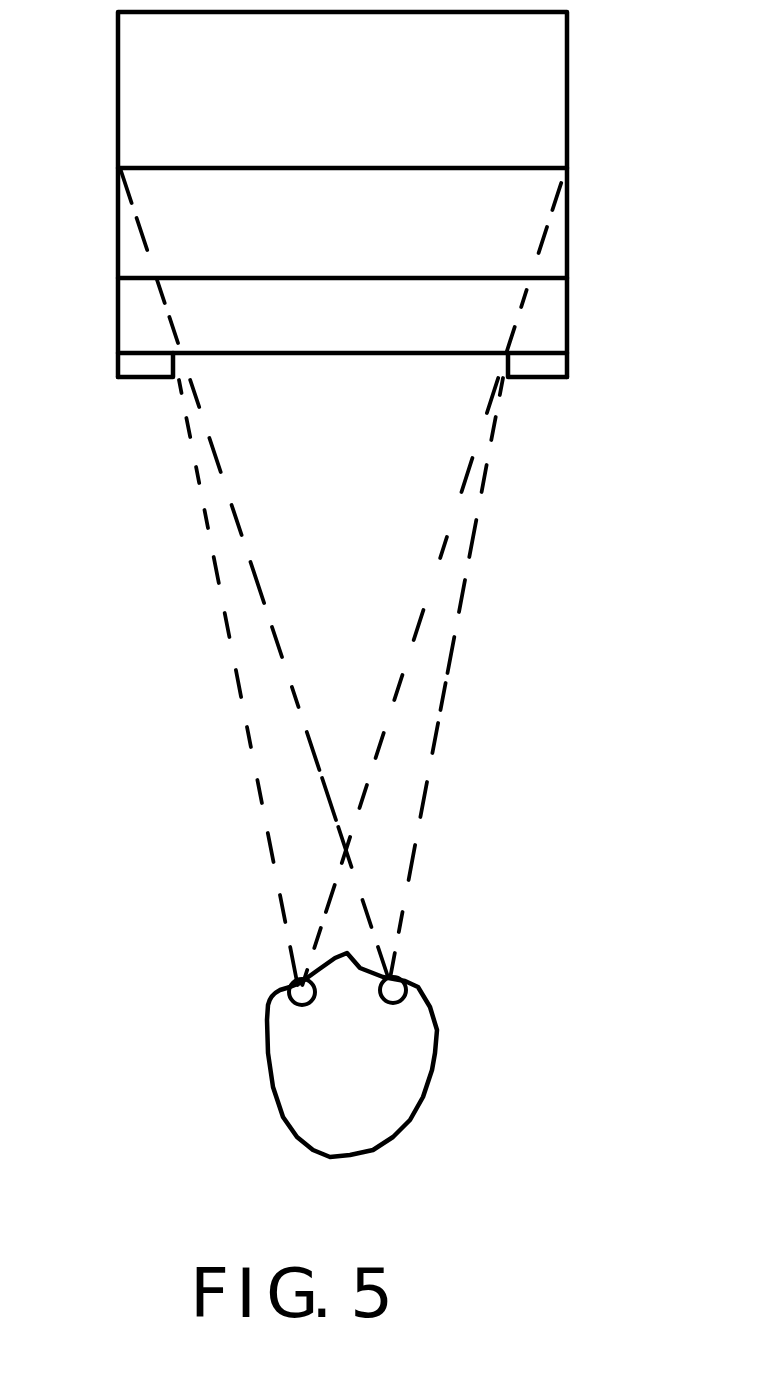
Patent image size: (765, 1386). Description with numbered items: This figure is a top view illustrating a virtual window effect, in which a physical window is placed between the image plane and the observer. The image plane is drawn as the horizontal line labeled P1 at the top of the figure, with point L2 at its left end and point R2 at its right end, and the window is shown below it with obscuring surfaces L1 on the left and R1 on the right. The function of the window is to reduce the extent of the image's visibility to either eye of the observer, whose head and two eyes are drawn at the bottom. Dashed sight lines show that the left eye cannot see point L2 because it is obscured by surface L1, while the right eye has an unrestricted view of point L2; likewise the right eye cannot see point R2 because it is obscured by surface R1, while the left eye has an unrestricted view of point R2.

The display panel / image plane P1 is at (268, 165).
The point L2 is at (124, 165).
The point R2 is at (557, 157).
The surface L1 is at (165, 382).
The surface R1 is at (510, 387).